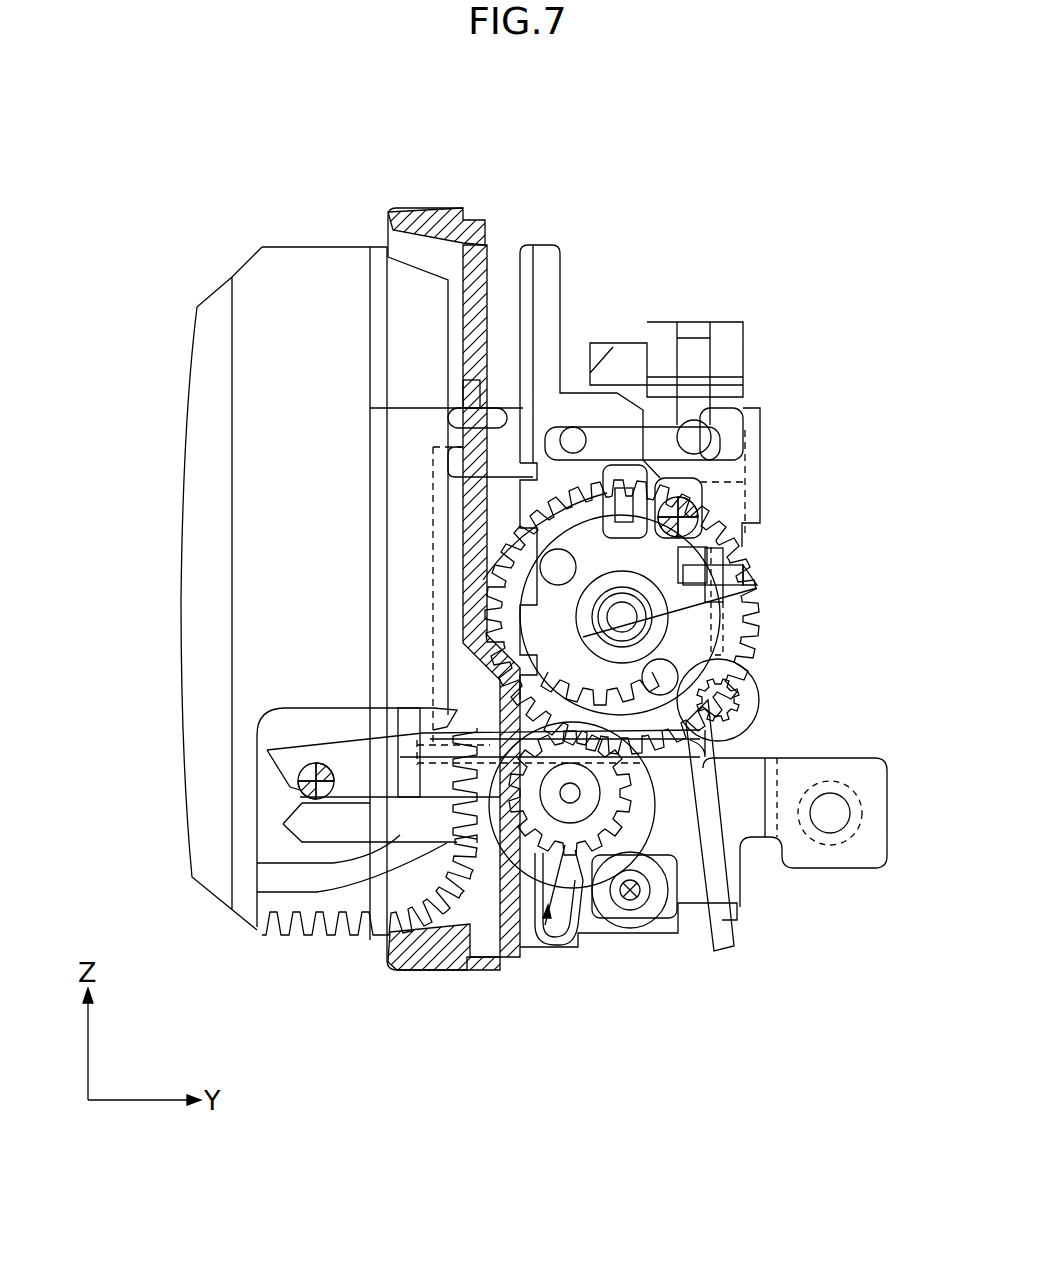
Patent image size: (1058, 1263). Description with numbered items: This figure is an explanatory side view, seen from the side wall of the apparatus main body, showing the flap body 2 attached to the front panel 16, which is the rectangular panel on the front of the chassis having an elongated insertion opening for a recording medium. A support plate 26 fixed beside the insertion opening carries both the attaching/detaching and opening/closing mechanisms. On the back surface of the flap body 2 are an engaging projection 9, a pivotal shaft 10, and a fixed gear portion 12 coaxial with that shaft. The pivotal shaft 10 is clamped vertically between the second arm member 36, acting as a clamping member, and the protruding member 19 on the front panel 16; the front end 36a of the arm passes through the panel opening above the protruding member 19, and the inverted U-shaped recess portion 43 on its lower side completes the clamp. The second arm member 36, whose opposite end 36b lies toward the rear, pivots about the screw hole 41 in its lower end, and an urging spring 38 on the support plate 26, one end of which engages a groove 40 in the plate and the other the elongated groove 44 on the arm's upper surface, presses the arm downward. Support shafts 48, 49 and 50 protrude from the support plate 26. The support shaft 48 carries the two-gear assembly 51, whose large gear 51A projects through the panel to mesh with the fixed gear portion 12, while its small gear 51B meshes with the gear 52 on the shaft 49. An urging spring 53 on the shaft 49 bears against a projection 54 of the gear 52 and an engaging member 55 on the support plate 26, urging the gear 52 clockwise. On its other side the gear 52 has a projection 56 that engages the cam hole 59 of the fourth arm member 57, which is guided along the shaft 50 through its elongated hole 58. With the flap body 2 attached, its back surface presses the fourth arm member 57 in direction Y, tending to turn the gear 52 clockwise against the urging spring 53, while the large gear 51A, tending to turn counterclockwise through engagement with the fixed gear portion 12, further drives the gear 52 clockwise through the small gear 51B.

The flap body 2 is at (307, 233).
The engaging projection 9 is at (492, 400).
The pivotal shaft 10 is at (305, 805).
The fixed gear portion 12 is at (360, 945).
The front panel 16 is at (438, 217).
The protruding member 19 is at (305, 830).
The support plate 26 is at (547, 263).
The second arm member 36 is at (340, 745).
The front end of the second arm member 36a is at (280, 753).
The lever arm end 36b is at (700, 757).
The urging spring 38 is at (758, 700).
The groove 40 is at (692, 925).
The screw hole 41 is at (632, 893).
The inverted U-shaped recess portion 43 is at (300, 801).
The elongated groove 44 is at (430, 743).
The support shaft 48 is at (693, 800).
The shaft 49 is at (640, 633).
The shaft 50 is at (575, 428).
The two-gear assembly 51 is at (532, 948).
The large gear 51A is at (565, 905).
The small gear 51B is at (572, 910).
The gear 52 is at (757, 613).
The urging spring 53 is at (585, 620).
The projection 54 is at (727, 553).
The engaging member 55 is at (740, 588).
The projection 56 is at (700, 530).
The fourth arm member 57 is at (743, 430).
The elongated hole 58 is at (723, 448).
The cam hole 59 is at (700, 495).